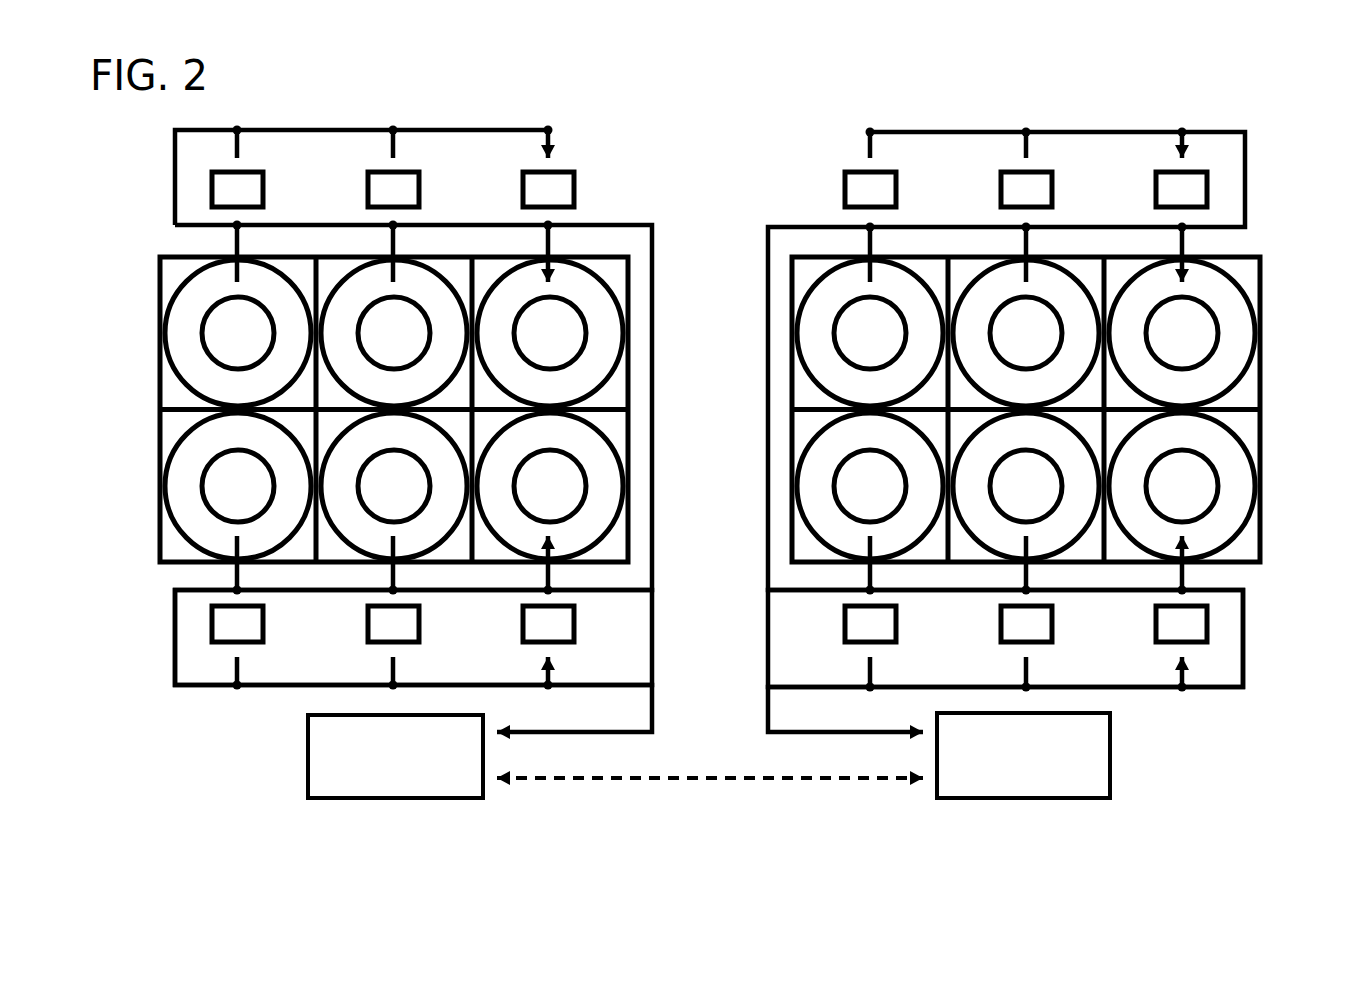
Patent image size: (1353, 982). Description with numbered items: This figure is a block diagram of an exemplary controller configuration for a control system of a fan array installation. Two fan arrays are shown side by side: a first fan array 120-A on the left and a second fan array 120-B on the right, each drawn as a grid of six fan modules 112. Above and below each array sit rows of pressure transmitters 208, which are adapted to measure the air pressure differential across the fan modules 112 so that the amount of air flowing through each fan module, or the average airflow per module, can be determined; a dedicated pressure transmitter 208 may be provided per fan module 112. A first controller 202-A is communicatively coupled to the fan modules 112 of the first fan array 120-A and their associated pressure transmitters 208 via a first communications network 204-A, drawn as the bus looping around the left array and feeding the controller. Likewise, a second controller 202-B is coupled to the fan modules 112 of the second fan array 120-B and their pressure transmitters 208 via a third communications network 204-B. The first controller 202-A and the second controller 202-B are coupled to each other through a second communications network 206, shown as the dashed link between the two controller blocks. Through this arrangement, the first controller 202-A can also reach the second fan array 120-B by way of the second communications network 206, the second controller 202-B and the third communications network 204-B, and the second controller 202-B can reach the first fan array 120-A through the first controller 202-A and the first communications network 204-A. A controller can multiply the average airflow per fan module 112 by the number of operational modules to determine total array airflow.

The fan module 112 is at (167, 253).
The first fan array 120-A is at (637, 197).
The second fan array 120-B is at (777, 197).
The pressure transmitter 208 is at (419, 184).
The first communications network 204-A is at (202, 686).
The third communications network 204-B is at (1222, 688).
The first controller 202-A is at (420, 781).
The second controller 202-B is at (1048, 781).
The second communications network 206 is at (600, 781).